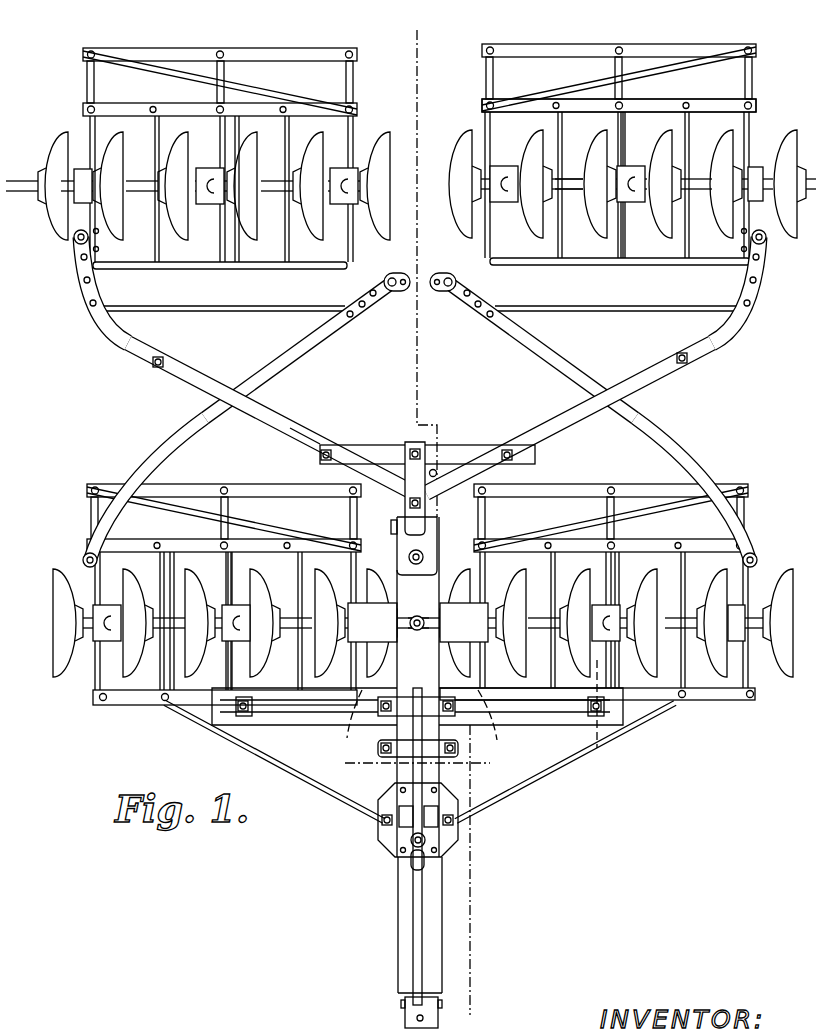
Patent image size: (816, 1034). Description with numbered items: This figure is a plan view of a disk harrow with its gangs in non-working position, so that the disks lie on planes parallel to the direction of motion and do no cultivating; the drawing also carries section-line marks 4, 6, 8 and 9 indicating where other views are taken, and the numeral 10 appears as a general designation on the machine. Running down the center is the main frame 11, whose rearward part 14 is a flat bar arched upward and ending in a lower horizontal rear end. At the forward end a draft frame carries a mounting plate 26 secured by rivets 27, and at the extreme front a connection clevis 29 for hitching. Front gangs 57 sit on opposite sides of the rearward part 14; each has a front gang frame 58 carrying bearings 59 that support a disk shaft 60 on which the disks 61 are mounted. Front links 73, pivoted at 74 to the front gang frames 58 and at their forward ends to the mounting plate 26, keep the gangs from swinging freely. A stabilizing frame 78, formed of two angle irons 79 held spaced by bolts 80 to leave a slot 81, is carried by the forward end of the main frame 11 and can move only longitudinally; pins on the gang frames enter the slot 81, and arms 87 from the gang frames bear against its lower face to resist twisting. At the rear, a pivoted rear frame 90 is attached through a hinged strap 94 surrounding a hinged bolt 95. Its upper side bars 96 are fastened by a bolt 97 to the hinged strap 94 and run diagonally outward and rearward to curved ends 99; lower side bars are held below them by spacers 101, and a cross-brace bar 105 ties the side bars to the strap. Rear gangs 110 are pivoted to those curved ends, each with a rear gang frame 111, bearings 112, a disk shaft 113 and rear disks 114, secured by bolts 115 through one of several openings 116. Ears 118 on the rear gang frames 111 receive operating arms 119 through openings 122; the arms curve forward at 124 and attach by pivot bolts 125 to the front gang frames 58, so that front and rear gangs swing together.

The section line 4- 4 is at (405, 29).
The section line 6- 6 is at (348, 763).
The section line 8- 8 is at (350, 735).
The section line 9- 9 is at (598, 673).
The disk harrow 10 is at (180, 357).
The main frame 11 is at (405, 735).
The rearward part 14 is at (407, 588).
The mounting plate 26 is at (392, 842).
The rivets 27 is at (397, 863).
The connection clevis 29 is at (410, 1008).
The front gangs 57 is at (165, 708).
The front gang frame 58 is at (110, 705).
The bearings 59 is at (112, 636).
The disk shaft 60 is at (173, 620).
The disks 61 is at (75, 580).
The front links 73 is at (553, 768).
The pivot (of front links) 74 is at (683, 700).
The stabilizing frame 78 is at (262, 722).
The angle irons 79 is at (568, 695).
The bolts 80 is at (243, 714).
The slot 81 is at (320, 708).
The arms 87 is at (500, 782).
The rear frame 90 is at (303, 444).
The hinged strap 94 is at (418, 497).
The hinged bolt 95 is at (405, 560).
The upper side bars 96 is at (187, 378).
The bolt 97 is at (428, 470).
The curved ends 99 is at (92, 318).
The spacers 101 is at (150, 362).
The cross-brace bar 105 is at (481, 452).
The rear gangs 110 is at (318, 83).
The rear gang frame 111 is at (745, 101).
The bearings 112 is at (503, 168).
The disk shaft 113 is at (570, 189).
The rear disks 114 is at (375, 140).
The bolts 115 is at (75, 243).
The openings 116 is at (84, 292).
The ears 118 is at (435, 292).
The operating arms 119 is at (192, 422).
The openings 122 is at (484, 318).
The curved forward ends 124 is at (112, 490).
The pivot bolts 125 is at (86, 552).